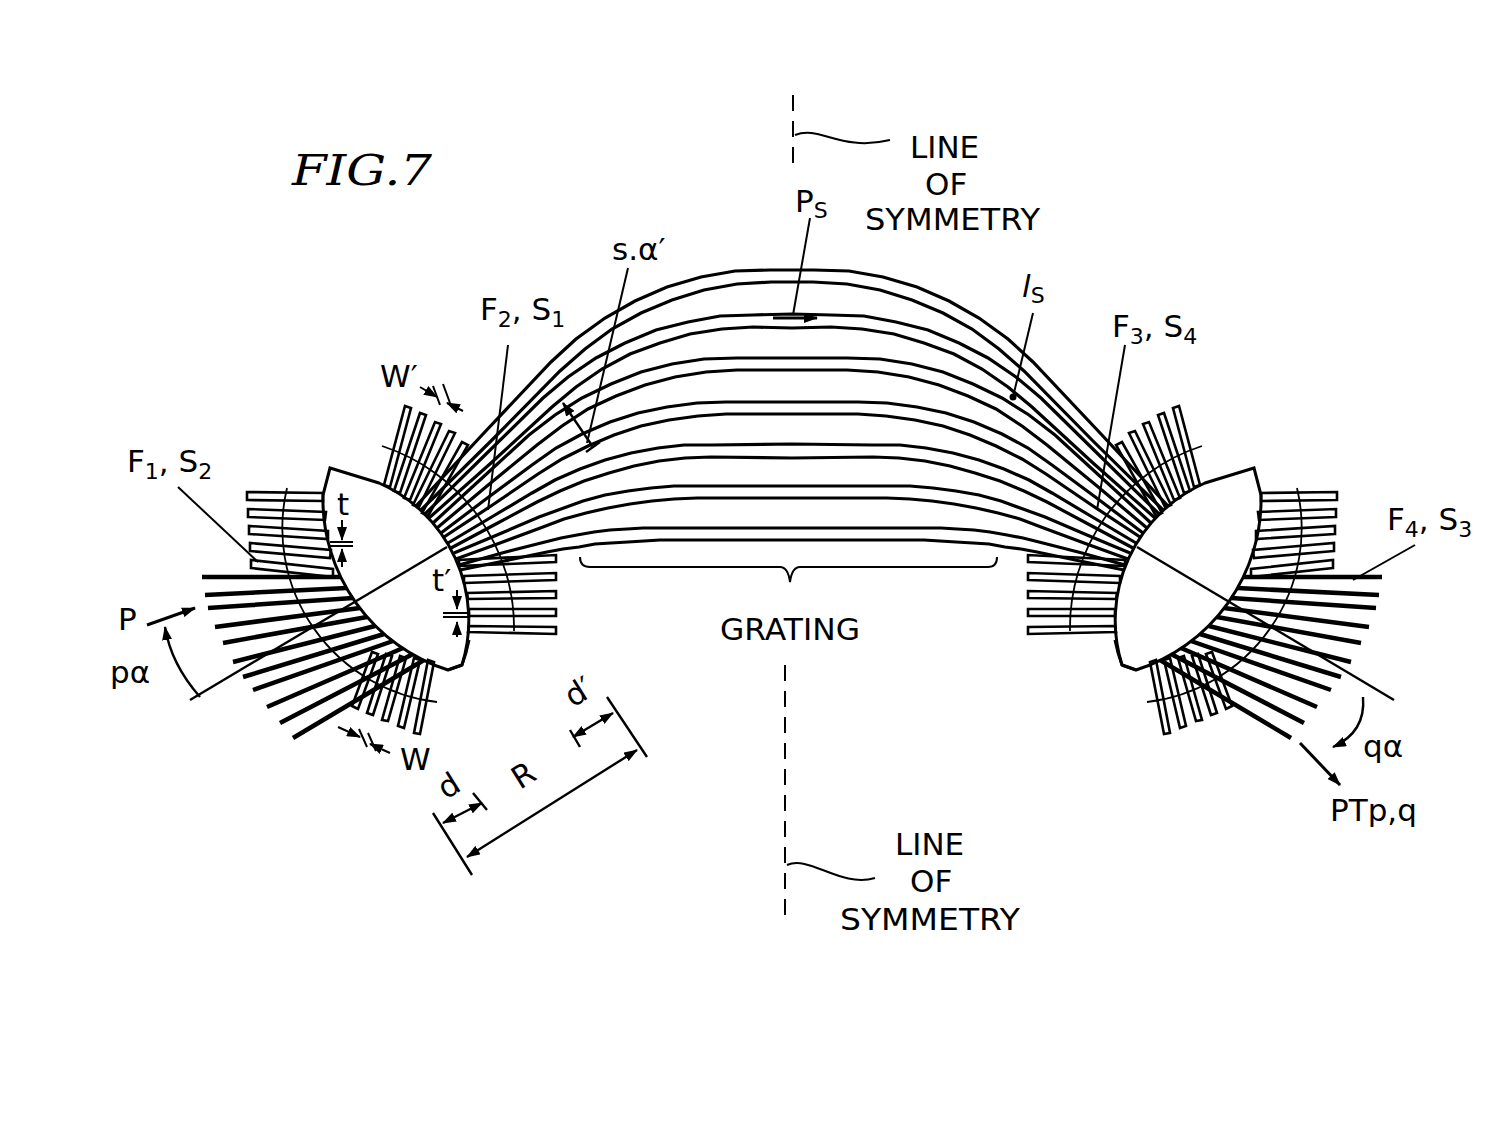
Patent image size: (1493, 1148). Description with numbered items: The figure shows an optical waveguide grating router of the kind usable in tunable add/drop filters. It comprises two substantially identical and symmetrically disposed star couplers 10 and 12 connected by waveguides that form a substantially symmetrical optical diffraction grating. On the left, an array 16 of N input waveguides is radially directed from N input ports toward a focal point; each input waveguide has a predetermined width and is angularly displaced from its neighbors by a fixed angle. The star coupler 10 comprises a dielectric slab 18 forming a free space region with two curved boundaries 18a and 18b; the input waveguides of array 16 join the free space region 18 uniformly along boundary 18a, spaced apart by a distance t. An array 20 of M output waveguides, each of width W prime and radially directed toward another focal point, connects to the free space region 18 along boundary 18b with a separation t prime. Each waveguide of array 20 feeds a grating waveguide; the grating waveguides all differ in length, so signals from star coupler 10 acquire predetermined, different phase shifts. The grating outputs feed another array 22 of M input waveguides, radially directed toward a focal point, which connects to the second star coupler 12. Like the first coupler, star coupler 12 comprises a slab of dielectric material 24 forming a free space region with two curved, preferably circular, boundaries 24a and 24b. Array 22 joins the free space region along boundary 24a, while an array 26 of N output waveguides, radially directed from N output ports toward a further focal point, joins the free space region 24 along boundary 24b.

The star coupler 10 is at (338, 460).
The second star coupler 12 is at (1260, 470).
The array of N input waveguides 16 is at (253, 697).
The dielectric slab 18 is at (410, 551).
The curved boundary 18a is at (448, 668).
The curved boundary 18b is at (470, 645).
The array of M output waveguides 20 is at (567, 601).
The array of M input waveguides 22 is at (1023, 570).
The slab of dielectric material 24 is at (1221, 563).
The curved boundary 24a is at (1120, 643).
The curved boundary 24b is at (1130, 677).
The array of N output waveguides 26 is at (1370, 637).